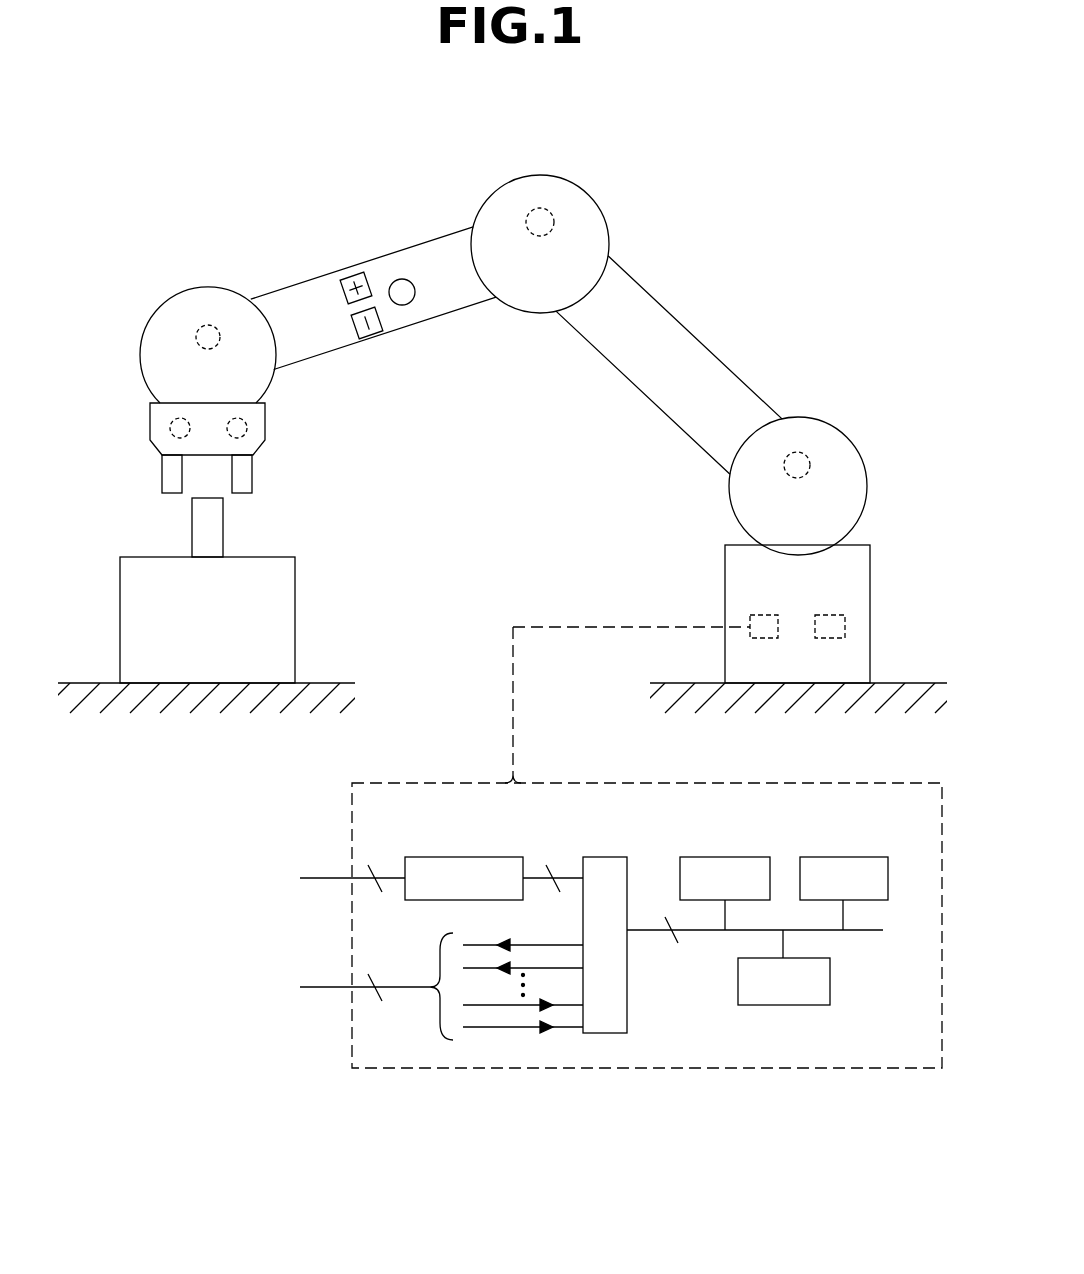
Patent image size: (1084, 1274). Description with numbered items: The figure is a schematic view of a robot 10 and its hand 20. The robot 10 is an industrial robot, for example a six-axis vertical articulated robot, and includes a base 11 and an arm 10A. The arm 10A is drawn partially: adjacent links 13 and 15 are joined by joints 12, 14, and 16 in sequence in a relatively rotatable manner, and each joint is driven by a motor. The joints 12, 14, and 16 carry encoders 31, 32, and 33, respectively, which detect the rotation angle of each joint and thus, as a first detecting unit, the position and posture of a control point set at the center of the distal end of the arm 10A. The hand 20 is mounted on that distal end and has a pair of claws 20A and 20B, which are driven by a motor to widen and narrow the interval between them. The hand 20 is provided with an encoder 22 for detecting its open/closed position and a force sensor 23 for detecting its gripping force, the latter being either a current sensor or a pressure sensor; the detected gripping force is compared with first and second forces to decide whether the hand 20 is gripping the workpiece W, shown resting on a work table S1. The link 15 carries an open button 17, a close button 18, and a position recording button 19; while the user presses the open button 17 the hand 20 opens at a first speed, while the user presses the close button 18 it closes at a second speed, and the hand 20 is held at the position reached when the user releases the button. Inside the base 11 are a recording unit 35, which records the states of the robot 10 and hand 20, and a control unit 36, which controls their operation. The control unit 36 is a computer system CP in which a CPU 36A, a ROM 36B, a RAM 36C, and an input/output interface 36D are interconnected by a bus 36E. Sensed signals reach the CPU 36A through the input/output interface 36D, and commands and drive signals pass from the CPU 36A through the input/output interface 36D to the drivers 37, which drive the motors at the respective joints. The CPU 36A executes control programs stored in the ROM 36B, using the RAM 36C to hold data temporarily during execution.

The robot 10 is at (684, 160).
The arm 10A is at (645, 253).
The base 11 is at (725, 570).
The joint 12 is at (850, 434).
The link 13 is at (674, 314).
The joint 14 is at (508, 180).
The link 15 is at (453, 316).
The joint 16 is at (184, 291).
The open button 17 is at (340, 292).
The close button 18 is at (348, 334).
The position recording button 19 is at (416, 279).
The hand 20 is at (267, 436).
The claw 20A is at (253, 487).
The claw 20B is at (162, 473).
The encoder 22 is at (250, 420).
The force sensor 23 is at (171, 427).
The encoder 31 is at (810, 453).
The encoder 32 is at (553, 210).
The encoder 33 is at (219, 326).
The recording unit 35 is at (830, 638).
The control unit 36 is at (762, 638).
The CPU 36A is at (777, 1005).
The ROM 36B is at (723, 857).
The RAM 36C is at (845, 857).
The input/output interface 36D is at (606, 857).
The bus 36E is at (647, 932).
The drivers 37 is at (466, 857).
The workpiece W is at (192, 542).
The work table S1 is at (120, 585).
The computer system CP is at (653, 1036).